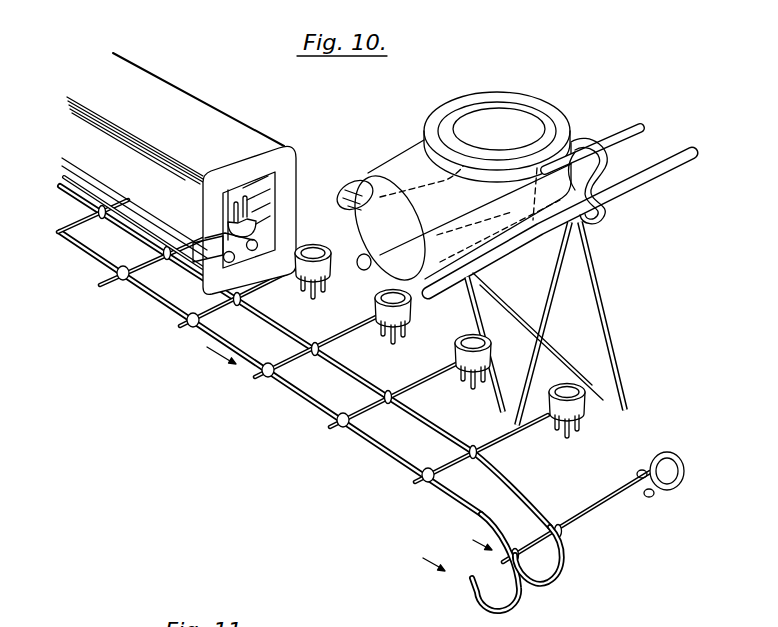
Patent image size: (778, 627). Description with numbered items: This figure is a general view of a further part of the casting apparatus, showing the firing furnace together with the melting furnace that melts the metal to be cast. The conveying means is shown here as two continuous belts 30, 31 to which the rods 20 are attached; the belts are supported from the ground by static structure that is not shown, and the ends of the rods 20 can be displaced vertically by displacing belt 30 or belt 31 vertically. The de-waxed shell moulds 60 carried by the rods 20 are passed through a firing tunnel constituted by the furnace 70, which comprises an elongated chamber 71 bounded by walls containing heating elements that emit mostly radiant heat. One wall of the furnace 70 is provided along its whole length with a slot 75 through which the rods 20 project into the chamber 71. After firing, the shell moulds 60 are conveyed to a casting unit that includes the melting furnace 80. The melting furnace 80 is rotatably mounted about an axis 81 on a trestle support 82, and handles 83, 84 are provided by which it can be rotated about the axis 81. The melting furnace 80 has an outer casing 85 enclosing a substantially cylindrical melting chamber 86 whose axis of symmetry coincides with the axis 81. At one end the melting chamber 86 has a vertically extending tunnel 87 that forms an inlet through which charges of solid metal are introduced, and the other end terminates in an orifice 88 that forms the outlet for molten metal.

The rods 20 is at (175, 312).
The continuous belt 30 is at (465, 587).
The continuous belt 31 is at (567, 558).
The shell moulds 60 is at (267, 235).
The furnace 70 is at (240, 122).
The elongated chamber 71 is at (266, 238).
The slot 75 is at (157, 222).
The melting furnace 80 is at (460, 92).
The axis 81 is at (647, 132).
The trestle support 82 is at (604, 331).
The handle 83 is at (602, 142).
The handle 84 is at (647, 178).
The outer casing 85 is at (388, 168).
The melting chamber 86 is at (514, 230).
The tunnel 87 is at (499, 125).
The orifice 88 is at (351, 194).